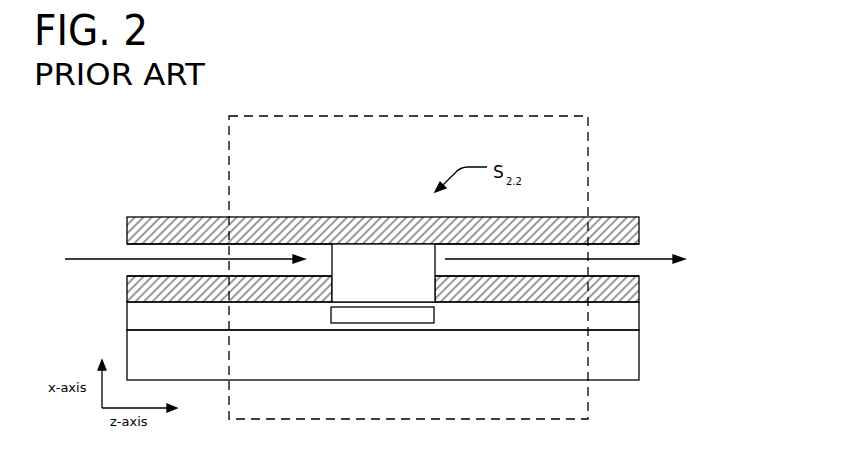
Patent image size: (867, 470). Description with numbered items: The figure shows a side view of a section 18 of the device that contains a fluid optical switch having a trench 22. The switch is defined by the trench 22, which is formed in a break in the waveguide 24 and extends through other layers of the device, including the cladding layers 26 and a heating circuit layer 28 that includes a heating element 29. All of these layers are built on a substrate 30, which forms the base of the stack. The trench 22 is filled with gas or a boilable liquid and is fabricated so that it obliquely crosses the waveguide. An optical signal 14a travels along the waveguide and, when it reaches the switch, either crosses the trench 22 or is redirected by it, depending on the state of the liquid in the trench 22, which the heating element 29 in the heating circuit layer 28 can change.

The section 18 is at (588, 142).
The cladding layers 26 is at (629, 217).
The waveguide 24 is at (629, 268).
The heating circuit layer 28 is at (629, 320).
The substrate 30 is at (172, 367).
The trench 22 is at (392, 279).
The heating element 29 is at (357, 323).
The optical signal 14a is at (102, 259).